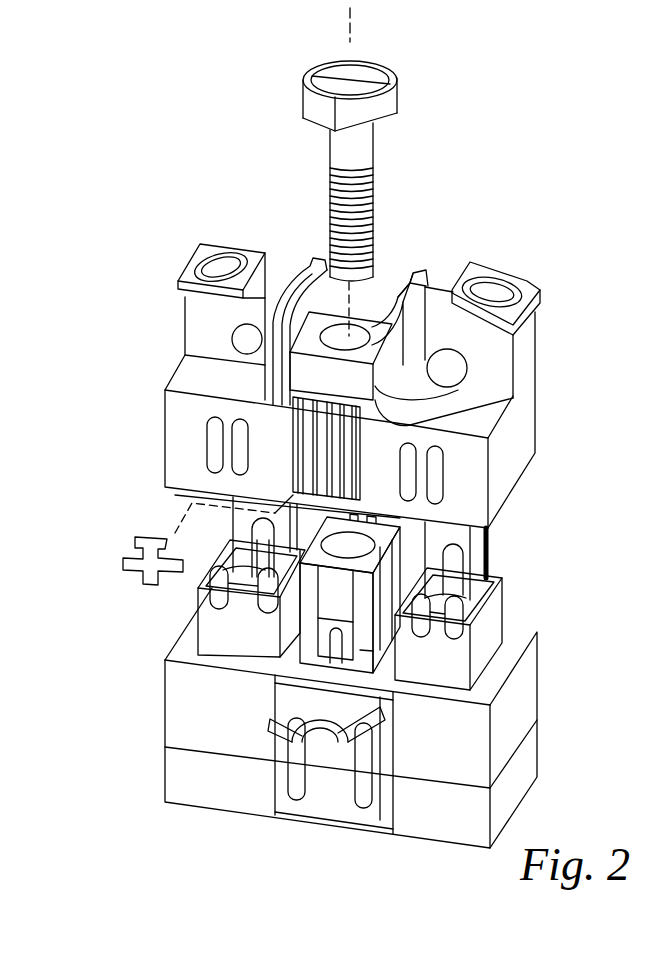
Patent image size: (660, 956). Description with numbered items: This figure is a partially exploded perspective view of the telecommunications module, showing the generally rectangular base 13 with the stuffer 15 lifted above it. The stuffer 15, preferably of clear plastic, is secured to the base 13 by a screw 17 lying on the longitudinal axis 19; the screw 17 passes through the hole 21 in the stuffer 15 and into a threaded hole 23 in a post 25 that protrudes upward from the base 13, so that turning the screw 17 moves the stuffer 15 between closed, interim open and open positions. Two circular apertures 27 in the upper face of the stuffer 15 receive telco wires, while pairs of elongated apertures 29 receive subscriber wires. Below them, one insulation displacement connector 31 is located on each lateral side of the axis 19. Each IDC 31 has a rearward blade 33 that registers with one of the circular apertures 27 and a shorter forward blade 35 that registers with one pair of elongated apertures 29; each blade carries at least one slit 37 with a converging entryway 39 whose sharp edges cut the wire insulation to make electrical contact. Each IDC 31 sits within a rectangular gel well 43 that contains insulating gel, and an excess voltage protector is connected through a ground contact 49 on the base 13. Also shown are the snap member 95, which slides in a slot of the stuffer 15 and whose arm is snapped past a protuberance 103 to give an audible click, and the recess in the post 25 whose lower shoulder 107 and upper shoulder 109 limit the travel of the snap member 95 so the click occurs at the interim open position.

The base 13 is at (510, 714).
The stuffer 15 is at (515, 443).
The screw 17 is at (362, 148).
The longitudinal axis 19 is at (352, 42).
The hole 21 is at (357, 332).
The threaded hole 23 is at (340, 568).
The post 25 is at (303, 588).
The circular apertures 27 is at (250, 348).
The elongated apertures 29 is at (215, 447).
The insulation displacement connector 31 is at (496, 545).
The rearward blade 33 is at (405, 592).
The forward blade 35 is at (466, 615).
The slit 37 is at (323, 445).
The converging entryway 39 is at (420, 603).
The gel well 43 is at (490, 618).
The ground contact 49 is at (267, 727).
The snap member 95 is at (150, 548).
The protuberance 103 is at (342, 432).
The lower shoulder 107 is at (370, 648).
The upper shoulder 109 is at (330, 618).